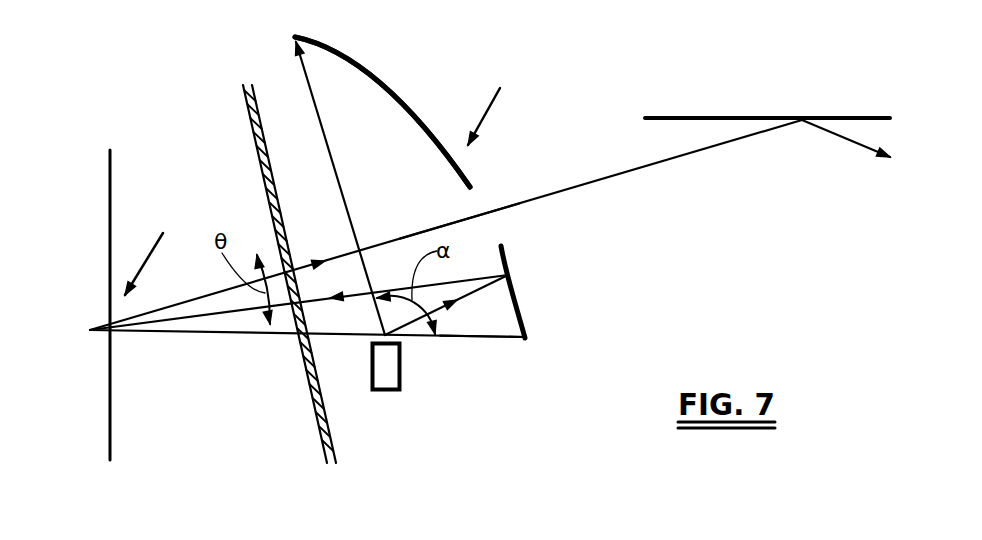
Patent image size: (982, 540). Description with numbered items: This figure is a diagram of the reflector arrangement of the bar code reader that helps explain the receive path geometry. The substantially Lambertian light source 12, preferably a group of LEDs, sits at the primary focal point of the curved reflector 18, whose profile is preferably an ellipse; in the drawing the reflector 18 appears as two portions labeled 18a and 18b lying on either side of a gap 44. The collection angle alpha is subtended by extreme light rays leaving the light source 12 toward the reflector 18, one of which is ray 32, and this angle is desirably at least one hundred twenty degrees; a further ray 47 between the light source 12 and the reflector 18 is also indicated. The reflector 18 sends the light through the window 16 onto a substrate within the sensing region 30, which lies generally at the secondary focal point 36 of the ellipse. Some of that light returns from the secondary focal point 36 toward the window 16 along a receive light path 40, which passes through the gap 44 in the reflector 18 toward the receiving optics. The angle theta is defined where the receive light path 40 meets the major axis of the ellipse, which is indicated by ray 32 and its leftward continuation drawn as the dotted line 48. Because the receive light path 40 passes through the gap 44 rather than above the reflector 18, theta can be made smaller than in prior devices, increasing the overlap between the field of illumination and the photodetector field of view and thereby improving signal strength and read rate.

The light source 12 is at (402, 382).
The window 16 is at (247, 110).
The reflector 18 is at (407, 112).
The upper mirror segment 18a is at (352, 62).
The lower mirror segment 18b is at (523, 313).
The sensing region 30 is at (148, 250).
The extreme light ray 32 is at (487, 338).
The secondary focal point 36 is at (97, 324).
The receive light path 40 is at (553, 190).
The gap 44 is at (489, 225).
The beam from detector to mirror 18b 47 is at (508, 275).
The dotted line 48 is at (222, 337).